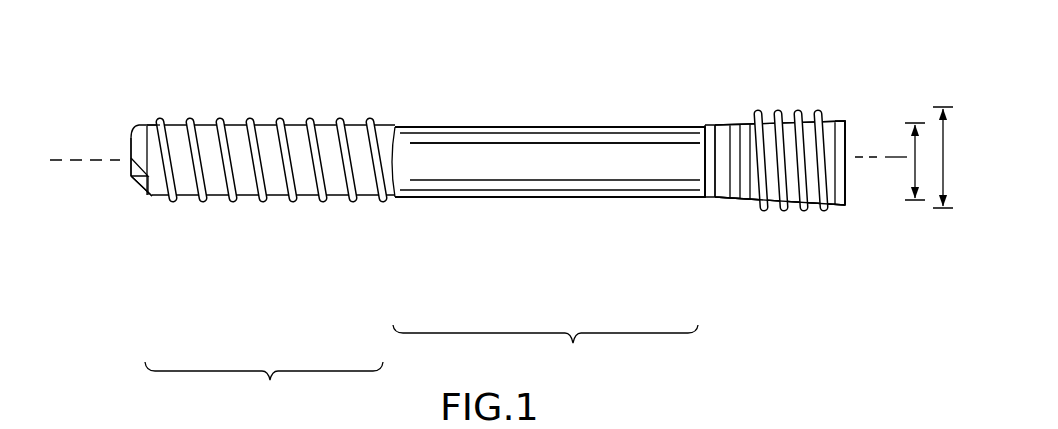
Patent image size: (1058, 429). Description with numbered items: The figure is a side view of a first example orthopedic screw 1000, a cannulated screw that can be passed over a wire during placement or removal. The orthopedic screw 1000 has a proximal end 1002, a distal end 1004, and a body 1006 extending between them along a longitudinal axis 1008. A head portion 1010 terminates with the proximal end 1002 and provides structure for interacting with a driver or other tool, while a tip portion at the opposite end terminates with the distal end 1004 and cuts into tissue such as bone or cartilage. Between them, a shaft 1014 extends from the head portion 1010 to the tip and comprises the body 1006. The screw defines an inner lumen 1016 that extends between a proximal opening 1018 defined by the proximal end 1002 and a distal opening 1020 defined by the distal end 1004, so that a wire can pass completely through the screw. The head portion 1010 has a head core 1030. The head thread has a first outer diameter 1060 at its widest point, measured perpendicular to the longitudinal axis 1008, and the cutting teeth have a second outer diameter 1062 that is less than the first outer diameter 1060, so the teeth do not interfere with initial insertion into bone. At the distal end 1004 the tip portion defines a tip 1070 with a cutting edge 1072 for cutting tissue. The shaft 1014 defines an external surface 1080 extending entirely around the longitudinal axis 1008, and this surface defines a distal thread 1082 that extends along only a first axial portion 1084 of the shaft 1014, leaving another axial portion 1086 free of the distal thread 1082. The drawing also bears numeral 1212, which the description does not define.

The orthopedic screw 1000 is at (367, 97).
The proximal end 1002 is at (840, 118).
The distal end 1004 is at (146, 128).
The body 1006 is at (565, 116).
The longitudinal axis 1008 is at (889, 156).
The head portion 1010 is at (762, 96).
The shaft 1014 is at (470, 103).
The inner lumen 1016 is at (127, 137).
The proximal opening 1018 is at (850, 198).
The distal opening 1020 is at (119, 171).
The head core 1030 is at (787, 213).
The first outer diameter 1060 is at (943, 180).
The second outer diameter 1062 is at (913, 180).
The tip 1070 is at (135, 188).
The cutting edge 1072 is at (130, 156).
The external surface 1080 is at (643, 137).
The distal thread 1082 is at (266, 198).
The first axial portion 1084 is at (264, 386).
The another axial portion 1086 is at (545, 350).
The cutting edge 1212 is at (133, 206).